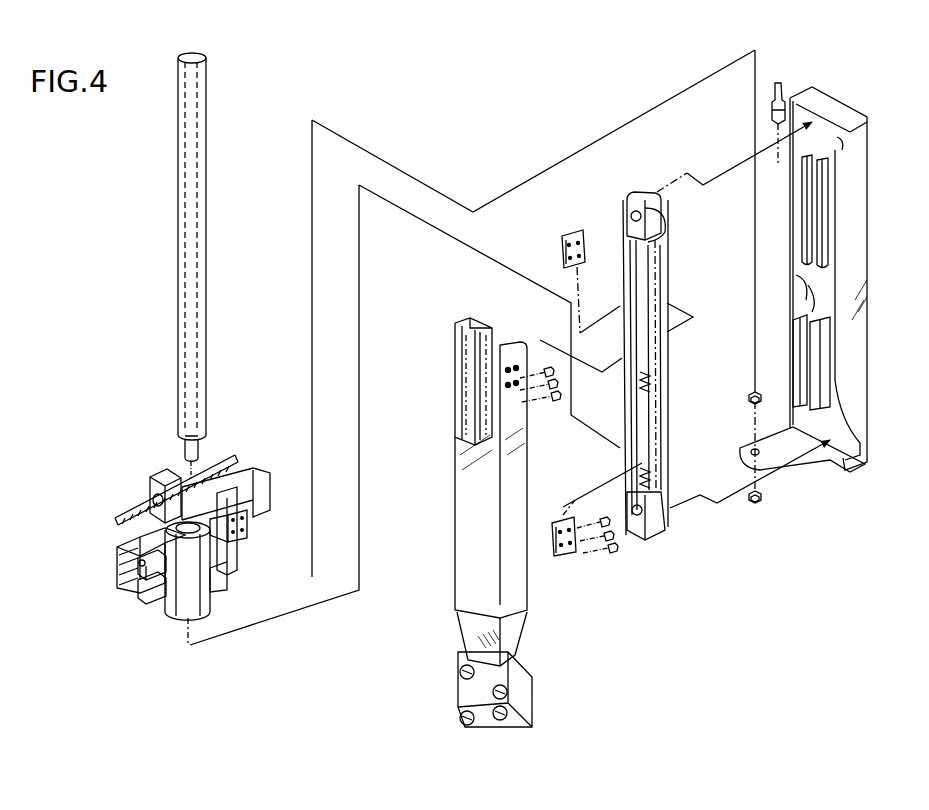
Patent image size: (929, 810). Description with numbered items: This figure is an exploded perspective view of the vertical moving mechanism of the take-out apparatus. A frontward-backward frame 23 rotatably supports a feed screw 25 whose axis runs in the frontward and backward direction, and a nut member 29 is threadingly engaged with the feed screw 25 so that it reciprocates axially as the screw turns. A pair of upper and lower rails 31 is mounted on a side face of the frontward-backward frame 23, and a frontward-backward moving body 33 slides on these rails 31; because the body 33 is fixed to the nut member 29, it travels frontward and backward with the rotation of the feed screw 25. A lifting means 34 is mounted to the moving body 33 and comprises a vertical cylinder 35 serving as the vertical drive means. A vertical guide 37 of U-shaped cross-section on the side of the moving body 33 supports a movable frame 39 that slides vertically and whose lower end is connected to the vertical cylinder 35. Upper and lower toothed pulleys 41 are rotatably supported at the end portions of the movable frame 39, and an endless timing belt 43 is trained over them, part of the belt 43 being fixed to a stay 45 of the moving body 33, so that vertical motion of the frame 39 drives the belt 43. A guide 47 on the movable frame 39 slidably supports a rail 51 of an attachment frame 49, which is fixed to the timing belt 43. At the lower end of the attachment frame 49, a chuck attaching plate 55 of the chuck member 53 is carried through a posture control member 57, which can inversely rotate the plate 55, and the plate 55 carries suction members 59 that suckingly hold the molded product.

The frontward-backward frame 23 is at (122, 544).
The feed screw 25 is at (130, 502).
The nut member 29 is at (156, 486).
The upper and lower rails 31 is at (150, 577).
The frontward-backward moving body 33 is at (155, 592).
The lifting means 34 is at (135, 323).
The vertical cylinder 35 is at (203, 332).
The vertical guide 37 is at (237, 485).
The movable frame 39 is at (855, 367).
The toothed pulleys 41 is at (652, 238).
The timing belt 43 is at (668, 368).
The stay 45 is at (243, 540).
The guide 47 is at (845, 160).
The attachment frame 49 is at (518, 458).
The rail 51 is at (482, 440).
The chuck member 53 is at (565, 672).
The chuck attaching plate 55 is at (528, 710).
The posture control member 57 is at (518, 636).
The suction members 59 is at (458, 676).